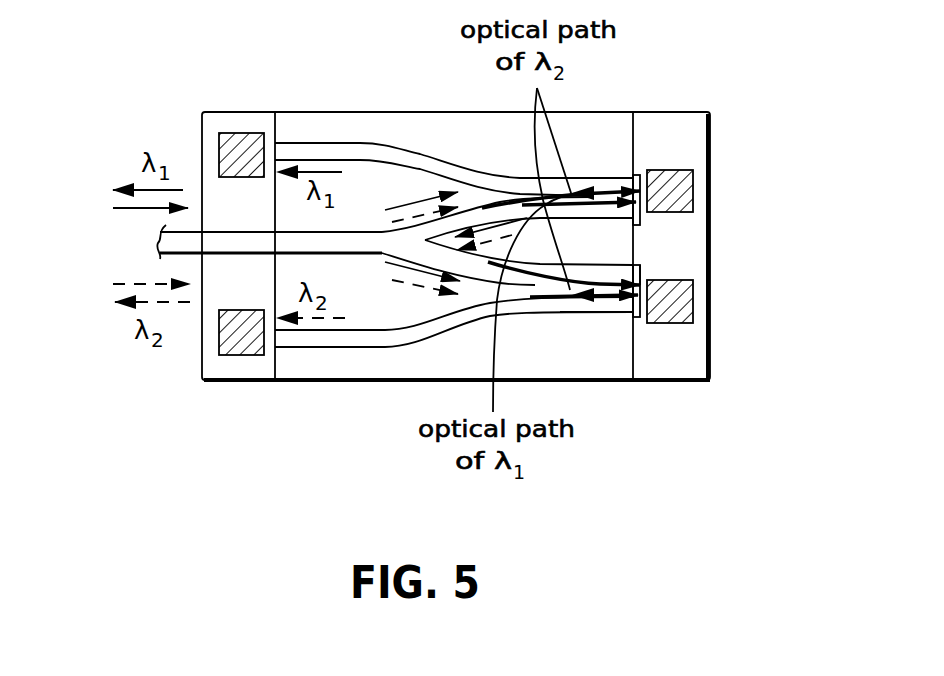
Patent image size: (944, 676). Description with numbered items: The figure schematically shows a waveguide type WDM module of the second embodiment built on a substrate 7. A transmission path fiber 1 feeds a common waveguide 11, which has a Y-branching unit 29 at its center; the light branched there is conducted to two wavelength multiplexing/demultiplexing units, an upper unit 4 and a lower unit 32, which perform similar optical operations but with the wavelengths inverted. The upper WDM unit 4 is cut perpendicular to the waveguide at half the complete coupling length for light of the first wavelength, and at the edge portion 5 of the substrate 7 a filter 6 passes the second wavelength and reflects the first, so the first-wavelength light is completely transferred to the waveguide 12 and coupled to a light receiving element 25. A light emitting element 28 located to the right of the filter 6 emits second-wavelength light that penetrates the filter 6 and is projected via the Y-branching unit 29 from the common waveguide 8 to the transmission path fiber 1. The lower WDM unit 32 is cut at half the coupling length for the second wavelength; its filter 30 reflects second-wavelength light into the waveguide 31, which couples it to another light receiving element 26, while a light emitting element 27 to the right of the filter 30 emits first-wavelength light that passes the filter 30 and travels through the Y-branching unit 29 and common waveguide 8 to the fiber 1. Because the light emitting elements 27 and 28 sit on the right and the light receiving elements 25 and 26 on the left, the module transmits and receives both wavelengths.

The transmission path fiber 1 is at (156, 240).
The upper wavelength multiplexing/demultiplexing unit 4 is at (599, 137).
The edge portion 5 is at (620, 318).
The filter 6 is at (597, 280).
The substrate 7 is at (428, 112).
The common waveguide 8 is at (242, 263).
The common waveguide 11 is at (340, 254).
The waveguide 12 is at (322, 143).
The light receiving element 25 is at (244, 133).
The light receiving element 26 is at (243, 356).
The light emitting element 27 is at (692, 305).
The light emitting element 28 is at (663, 168).
The Y-branching unit 29 is at (398, 254).
The filter 30 is at (640, 270).
The waveguide 31 is at (310, 348).
The lower wavelength multiplexing/demultiplexing unit 32 is at (594, 314).